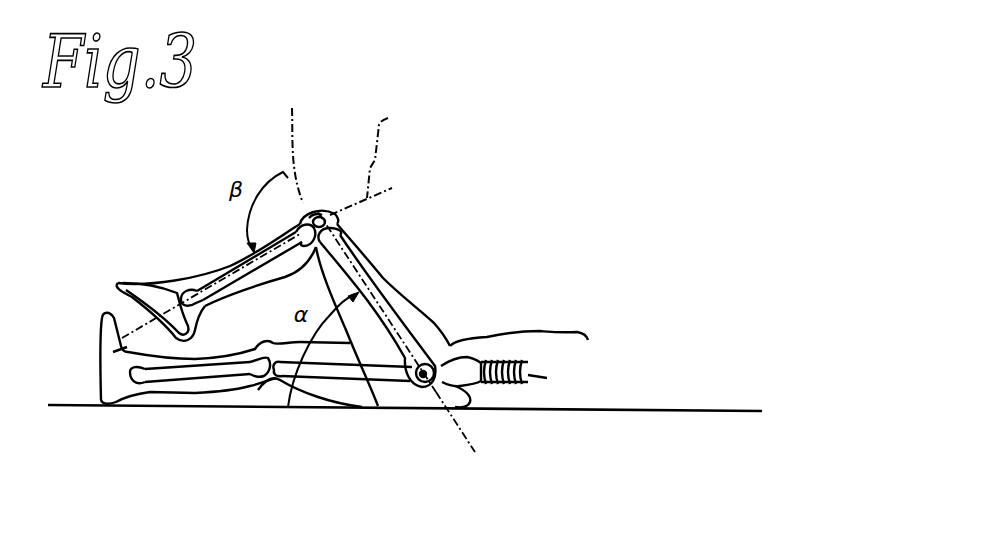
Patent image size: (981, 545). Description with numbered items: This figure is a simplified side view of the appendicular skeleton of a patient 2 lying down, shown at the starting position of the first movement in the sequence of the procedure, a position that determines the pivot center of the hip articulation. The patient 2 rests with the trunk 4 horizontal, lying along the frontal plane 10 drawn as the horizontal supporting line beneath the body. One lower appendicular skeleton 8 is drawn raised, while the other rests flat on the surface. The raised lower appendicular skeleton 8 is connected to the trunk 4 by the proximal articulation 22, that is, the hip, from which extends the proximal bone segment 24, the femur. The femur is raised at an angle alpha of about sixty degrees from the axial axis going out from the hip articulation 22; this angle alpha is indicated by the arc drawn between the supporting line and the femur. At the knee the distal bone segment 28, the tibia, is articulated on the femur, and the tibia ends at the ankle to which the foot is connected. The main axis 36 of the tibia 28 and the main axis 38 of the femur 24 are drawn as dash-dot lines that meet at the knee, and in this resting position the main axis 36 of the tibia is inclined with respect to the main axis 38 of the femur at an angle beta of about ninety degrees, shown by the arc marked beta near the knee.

The patient 2 is at (618, 354).
The trunk 4 is at (557, 347).
The lower appendicular skeleton 8 is at (142, 269).
The frontal plane 10 is at (720, 408).
The proximal articulation 22 is at (448, 388).
The proximal bone segment 24 is at (404, 296).
The distal bone segment 28 is at (217, 284).
The main axis of the tibia 36 is at (374, 158).
The main axis of the femur 38 is at (303, 144).